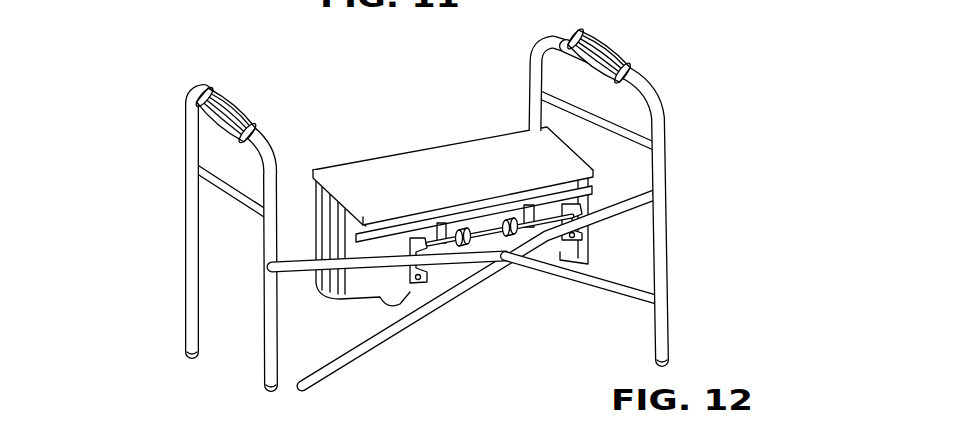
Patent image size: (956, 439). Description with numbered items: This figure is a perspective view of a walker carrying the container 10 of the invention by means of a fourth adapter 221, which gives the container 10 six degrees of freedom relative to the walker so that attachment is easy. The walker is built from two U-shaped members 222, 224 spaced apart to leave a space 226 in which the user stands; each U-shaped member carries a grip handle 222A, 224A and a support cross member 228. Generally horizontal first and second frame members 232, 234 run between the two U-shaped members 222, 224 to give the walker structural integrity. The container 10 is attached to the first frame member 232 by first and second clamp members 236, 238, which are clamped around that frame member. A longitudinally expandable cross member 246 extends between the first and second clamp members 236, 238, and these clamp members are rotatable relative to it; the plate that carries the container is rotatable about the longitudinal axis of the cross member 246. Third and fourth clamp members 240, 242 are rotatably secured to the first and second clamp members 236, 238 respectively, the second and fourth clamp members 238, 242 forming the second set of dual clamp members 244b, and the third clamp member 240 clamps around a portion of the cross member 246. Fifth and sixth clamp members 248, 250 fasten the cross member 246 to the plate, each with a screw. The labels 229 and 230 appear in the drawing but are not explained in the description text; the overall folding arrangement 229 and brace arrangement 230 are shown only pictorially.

The container 10 is at (449, 114).
The fourth adapter 221 is at (662, 190).
The U-shaped member 222 is at (183, 205).
The grip handle 222A is at (247, 110).
The U-shaped member 224 is at (665, 152).
The grip handle 224A is at (616, 20).
The space 226 is at (362, 100).
The support cross member 228 is at (613, 127).
The folding mechanism 229 is at (722, 36).
The cross brace assembly 230 is at (497, 313).
The first frame member 232 is at (300, 265).
The second frame member 234 is at (363, 357).
The first clamp member 236 is at (395, 297).
The second clamp member 238 is at (587, 228).
The third clamp member 240 is at (382, 220).
The fourth clamp member 242 is at (565, 205).
The second set of dual clamp members 244b is at (605, 250).
The cross member 246 is at (425, 225).
The fifth clamp member 248 is at (445, 225).
The sixth clamp member 250 is at (510, 222).